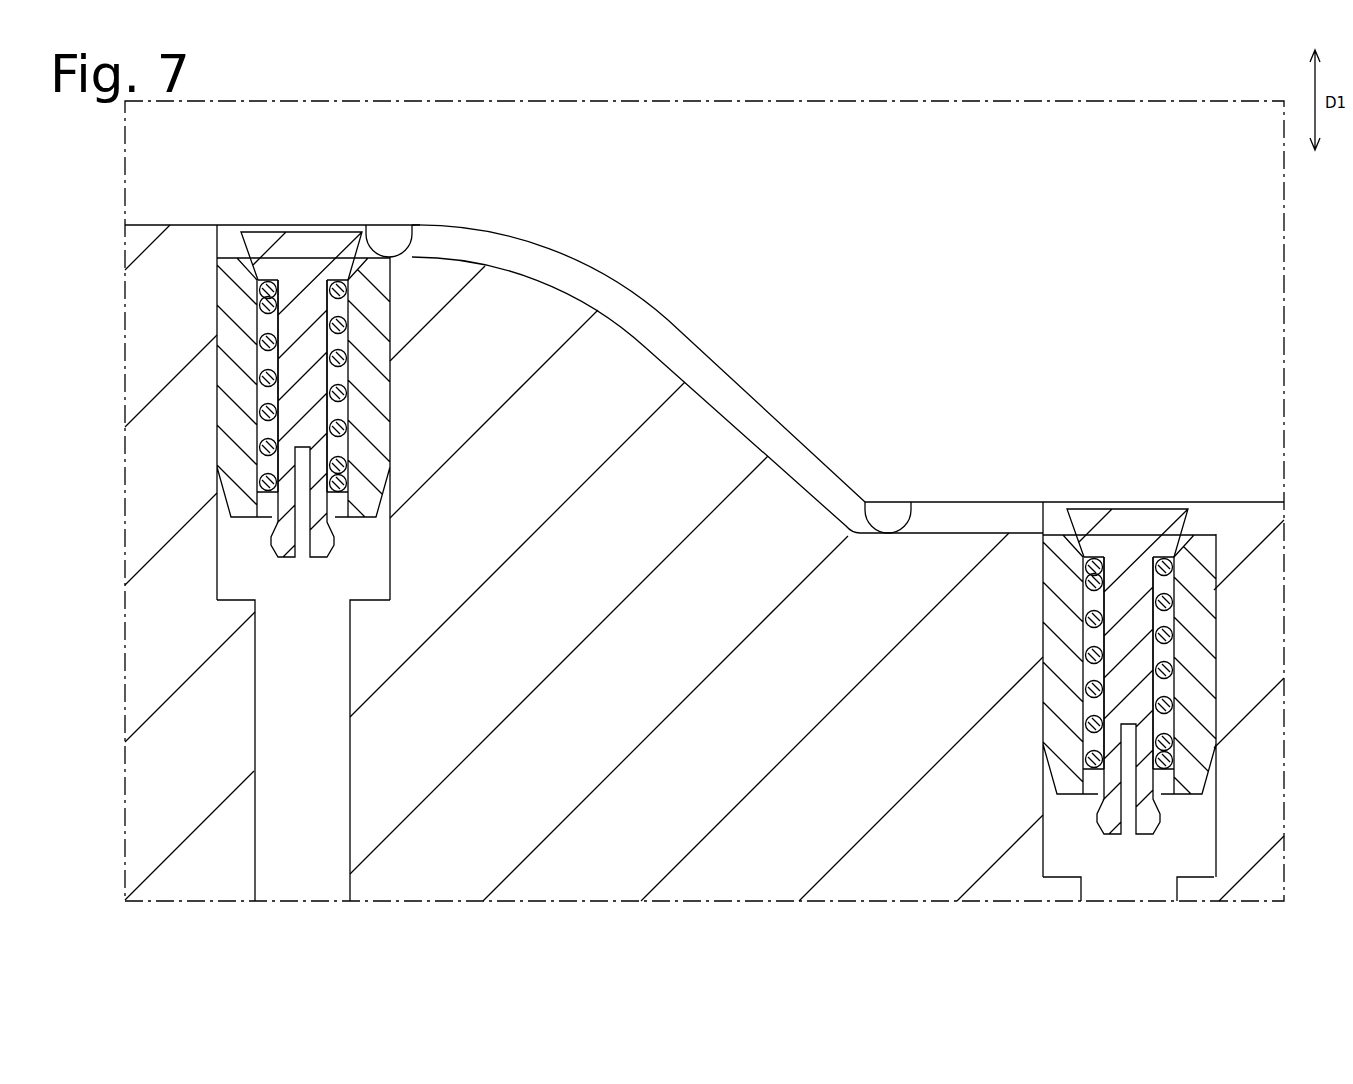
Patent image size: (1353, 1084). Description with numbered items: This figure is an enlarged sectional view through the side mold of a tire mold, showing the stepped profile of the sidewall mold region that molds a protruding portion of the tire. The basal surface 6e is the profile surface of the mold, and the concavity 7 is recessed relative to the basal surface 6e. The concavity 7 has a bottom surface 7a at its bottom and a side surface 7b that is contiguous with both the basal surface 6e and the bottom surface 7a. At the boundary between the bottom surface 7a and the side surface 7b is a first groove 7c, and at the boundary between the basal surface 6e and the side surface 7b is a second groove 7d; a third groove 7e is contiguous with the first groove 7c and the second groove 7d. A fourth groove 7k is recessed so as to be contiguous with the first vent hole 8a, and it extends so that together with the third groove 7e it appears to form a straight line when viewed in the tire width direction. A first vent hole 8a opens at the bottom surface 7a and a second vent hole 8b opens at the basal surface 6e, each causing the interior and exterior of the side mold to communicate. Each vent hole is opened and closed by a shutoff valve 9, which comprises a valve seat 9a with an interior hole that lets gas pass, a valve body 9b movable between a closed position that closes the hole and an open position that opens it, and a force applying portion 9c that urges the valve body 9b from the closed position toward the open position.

The basal surface 6e is at (188, 224).
The concavity 7 is at (704, 508).
The bottom surface 7a is at (1243, 499).
The side surface 7b is at (685, 330).
The first groove 7c is at (893, 499).
The second groove 7d is at (394, 217).
The third groove 7e is at (624, 300).
The fourth groove 7k is at (974, 509).
The first vent hole 8a is at (1082, 889).
The second vent hole 8b is at (256, 836).
The shutoff valve 9 is at (716, 493).
The valve seat 9a is at (236, 257).
The valve body 9b is at (341, 222).
The force applying portion 9c is at (342, 470).